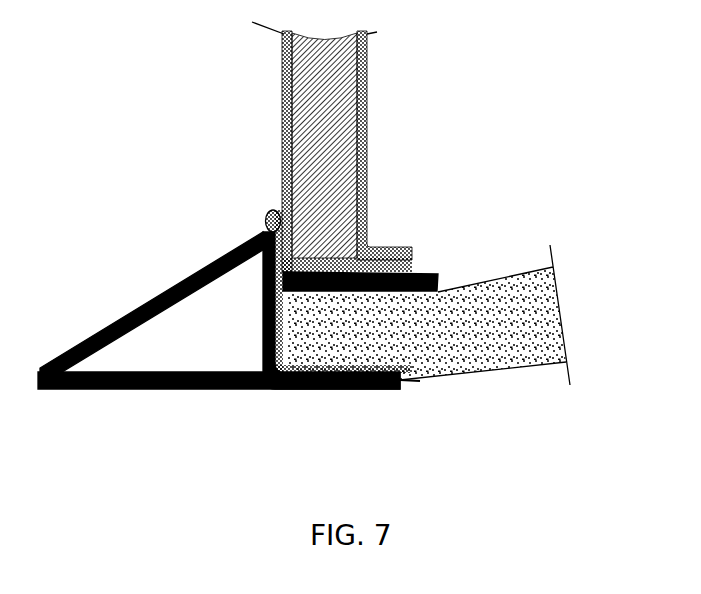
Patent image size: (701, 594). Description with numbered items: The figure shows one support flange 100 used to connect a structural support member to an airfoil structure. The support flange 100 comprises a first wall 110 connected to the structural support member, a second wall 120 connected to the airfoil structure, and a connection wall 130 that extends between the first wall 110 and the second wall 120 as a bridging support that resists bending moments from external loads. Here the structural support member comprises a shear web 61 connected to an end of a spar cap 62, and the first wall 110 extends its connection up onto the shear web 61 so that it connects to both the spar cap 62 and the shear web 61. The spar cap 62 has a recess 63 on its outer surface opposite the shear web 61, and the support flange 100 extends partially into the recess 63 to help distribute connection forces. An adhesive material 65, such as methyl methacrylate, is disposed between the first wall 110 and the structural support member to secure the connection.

The support flange 100 is at (105, 172).
The shear web 61 is at (368, 78).
The spar cap 62 is at (489, 285).
The recess 63 is at (428, 386).
The adhesive material 65 is at (270, 211).
The first wall 110 is at (262, 320).
The second wall 120 is at (136, 389).
The connection wall 130 is at (245, 239).